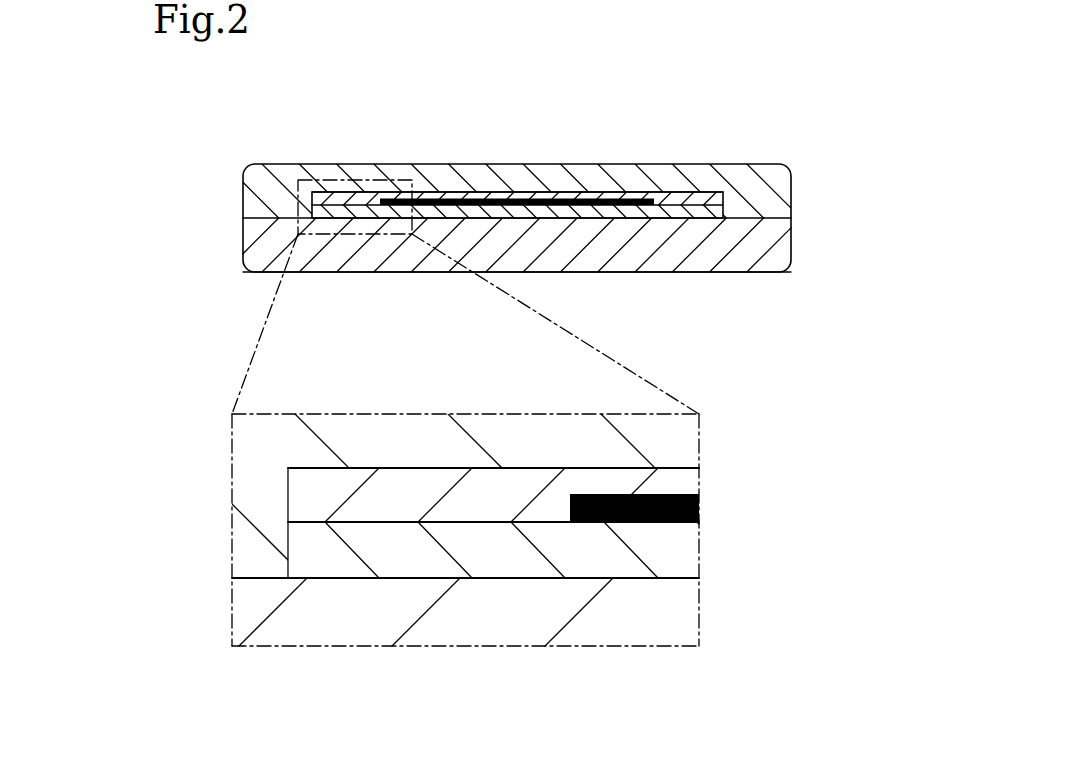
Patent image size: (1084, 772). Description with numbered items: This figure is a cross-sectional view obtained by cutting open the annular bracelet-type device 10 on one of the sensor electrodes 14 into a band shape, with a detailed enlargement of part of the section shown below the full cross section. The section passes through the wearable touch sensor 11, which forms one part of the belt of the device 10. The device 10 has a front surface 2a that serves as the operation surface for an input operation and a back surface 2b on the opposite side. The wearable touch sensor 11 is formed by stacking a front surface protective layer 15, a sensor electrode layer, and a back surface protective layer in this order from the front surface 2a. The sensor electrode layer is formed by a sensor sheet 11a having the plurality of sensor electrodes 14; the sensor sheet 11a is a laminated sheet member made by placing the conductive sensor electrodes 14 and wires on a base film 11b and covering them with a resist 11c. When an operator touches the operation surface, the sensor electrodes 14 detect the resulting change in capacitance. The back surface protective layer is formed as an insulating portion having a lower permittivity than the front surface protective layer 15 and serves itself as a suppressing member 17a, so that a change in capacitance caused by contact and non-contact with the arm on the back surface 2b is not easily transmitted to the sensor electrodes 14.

The bracelet-type device 10 is at (800, 161).
The wearable touch sensor 11 is at (288, 165).
The sensor sheet 11a is at (187, 428).
The base film 11b is at (493, 578).
The resist 11c is at (423, 468).
The sensor electrodes 14 is at (658, 524).
The front surface protective layer 15 is at (648, 164).
The suppressing member 17a is at (658, 272).
The front surface 2a is at (735, 164).
The back surface 2b is at (740, 272).